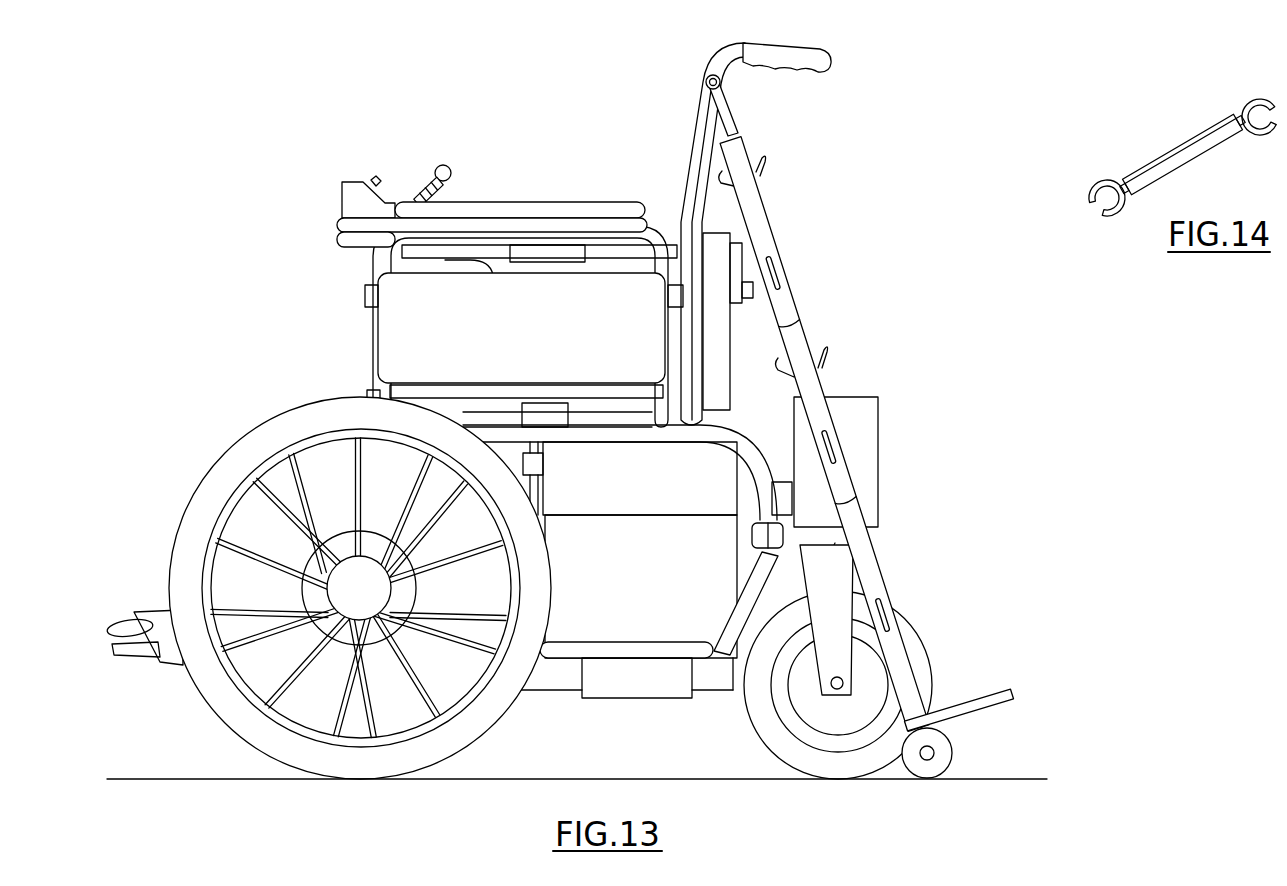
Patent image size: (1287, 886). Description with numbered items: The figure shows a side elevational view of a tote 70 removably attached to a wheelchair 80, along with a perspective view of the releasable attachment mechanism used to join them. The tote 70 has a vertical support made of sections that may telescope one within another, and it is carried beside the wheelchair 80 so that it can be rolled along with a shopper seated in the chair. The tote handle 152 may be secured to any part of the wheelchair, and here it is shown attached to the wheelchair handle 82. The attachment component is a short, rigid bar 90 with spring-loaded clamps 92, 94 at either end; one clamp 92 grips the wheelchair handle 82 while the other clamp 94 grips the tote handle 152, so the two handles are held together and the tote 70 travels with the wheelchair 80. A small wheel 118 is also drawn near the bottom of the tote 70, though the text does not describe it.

In FIG. 13, the wheelchair 80 is at (579, 396).
In FIG. 13, the wheelchair handle 82 is at (707, 62).
In FIG. 13, the tote handle 152 is at (706, 79).
In FIG. 13, the tote 70 is at (826, 320).
In FIG. 13, the wheel 118 is at (955, 758).
In FIG. 14, the rigid bar 90 is at (1173, 155).
In FIG. 14, the spring-loaded clamp 92 is at (1249, 106).
In FIG. 14, the spring-loaded clamp 94 is at (1099, 185).